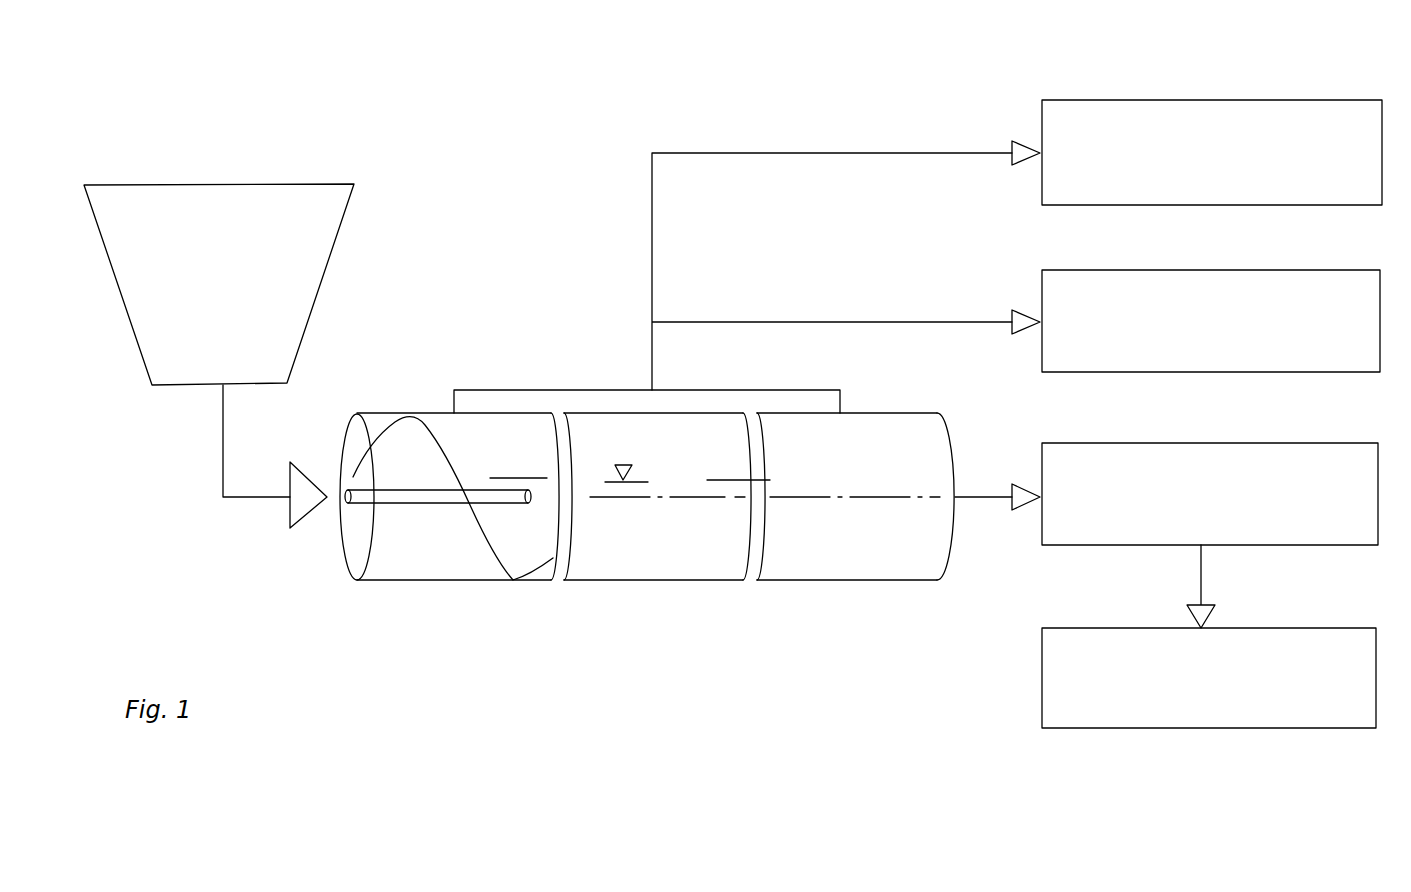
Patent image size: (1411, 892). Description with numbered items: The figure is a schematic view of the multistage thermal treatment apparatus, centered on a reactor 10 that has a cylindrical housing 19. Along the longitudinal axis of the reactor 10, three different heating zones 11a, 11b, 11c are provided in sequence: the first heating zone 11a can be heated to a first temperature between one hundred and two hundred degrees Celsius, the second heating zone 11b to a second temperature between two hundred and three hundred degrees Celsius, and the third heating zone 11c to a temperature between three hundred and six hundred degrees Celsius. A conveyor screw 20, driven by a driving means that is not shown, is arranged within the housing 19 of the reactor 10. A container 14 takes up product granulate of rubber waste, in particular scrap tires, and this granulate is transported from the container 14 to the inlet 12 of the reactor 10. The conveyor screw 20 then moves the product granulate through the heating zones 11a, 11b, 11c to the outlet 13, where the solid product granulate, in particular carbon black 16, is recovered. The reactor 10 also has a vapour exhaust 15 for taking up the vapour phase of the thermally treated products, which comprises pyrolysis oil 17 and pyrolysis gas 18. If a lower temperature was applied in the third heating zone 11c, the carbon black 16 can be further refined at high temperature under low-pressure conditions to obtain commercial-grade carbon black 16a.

The reactor 10 is at (647, 542).
The first heating zone 11a is at (423, 582).
The second heating zone 11b is at (700, 582).
The third heating zone 11c is at (852, 580).
The inlet 12 is at (355, 540).
The outlet 13 is at (955, 525).
The container 14 is at (328, 285).
The vapour exhaust 15 is at (755, 388).
The carbon black 16 is at (1220, 548).
The commercial-grade carbon black 16a is at (1272, 730).
The pyrolysis oil 17 is at (1185, 372).
The pyrolysis gas 18 is at (1207, 205).
The cylindrical housing 19 is at (642, 493).
The conveyor screw 20 is at (420, 415).